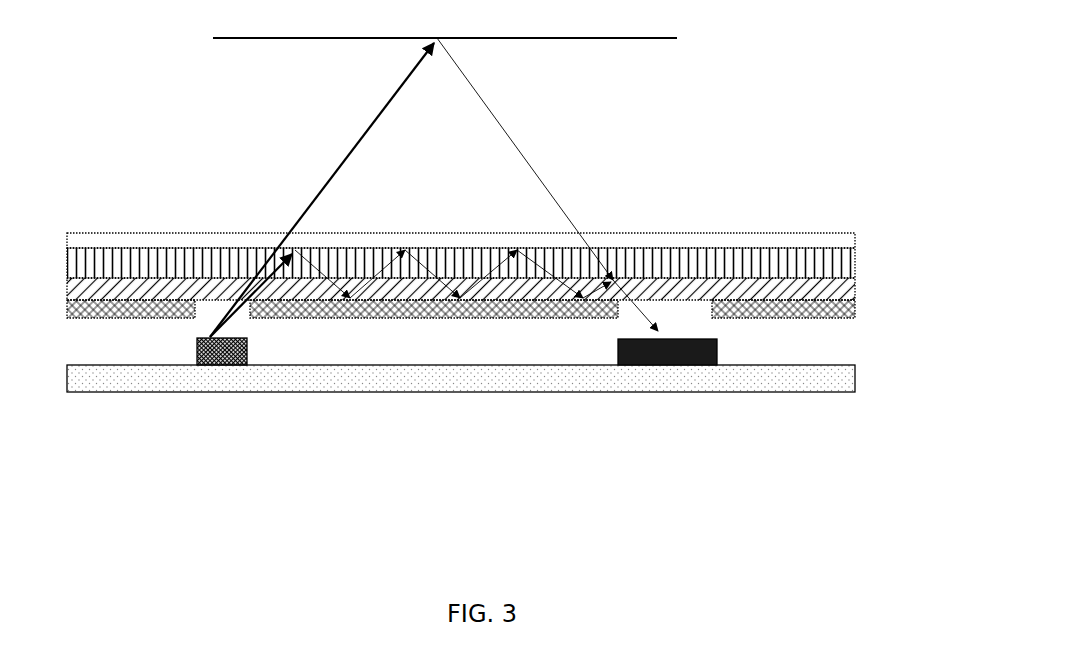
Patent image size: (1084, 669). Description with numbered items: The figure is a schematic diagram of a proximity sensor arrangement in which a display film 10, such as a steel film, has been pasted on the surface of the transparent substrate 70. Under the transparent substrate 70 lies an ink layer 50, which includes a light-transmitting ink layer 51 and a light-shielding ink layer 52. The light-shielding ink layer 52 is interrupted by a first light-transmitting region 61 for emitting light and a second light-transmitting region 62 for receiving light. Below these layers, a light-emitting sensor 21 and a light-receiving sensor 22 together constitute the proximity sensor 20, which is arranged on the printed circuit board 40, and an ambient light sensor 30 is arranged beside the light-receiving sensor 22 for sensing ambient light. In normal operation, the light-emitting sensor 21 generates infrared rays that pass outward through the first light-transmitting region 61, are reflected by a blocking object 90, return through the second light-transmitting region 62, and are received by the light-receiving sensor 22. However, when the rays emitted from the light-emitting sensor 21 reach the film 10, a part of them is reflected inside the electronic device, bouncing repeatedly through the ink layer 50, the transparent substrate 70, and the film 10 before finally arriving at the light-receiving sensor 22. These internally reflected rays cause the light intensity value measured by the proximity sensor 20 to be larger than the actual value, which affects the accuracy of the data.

The display film 10 is at (320, 233).
The proximity sensor 20 is at (411, 445).
The light-emitting sensor 21 is at (218, 365).
The light-receiving sensor 22 is at (625, 365).
The ambient light sensor 30 is at (697, 365).
The printed circuit board 40 is at (100, 392).
The ink layer 50 is at (513, 293).
The light-transmitting ink layer 51 is at (857, 290).
The light-shielding ink layer 52 is at (857, 312).
The first light-transmitting region 61 is at (200, 318).
The second light-transmitting region 62 is at (705, 318).
The transparent substrate 70 is at (857, 262).
The blocking object 90 is at (677, 38).